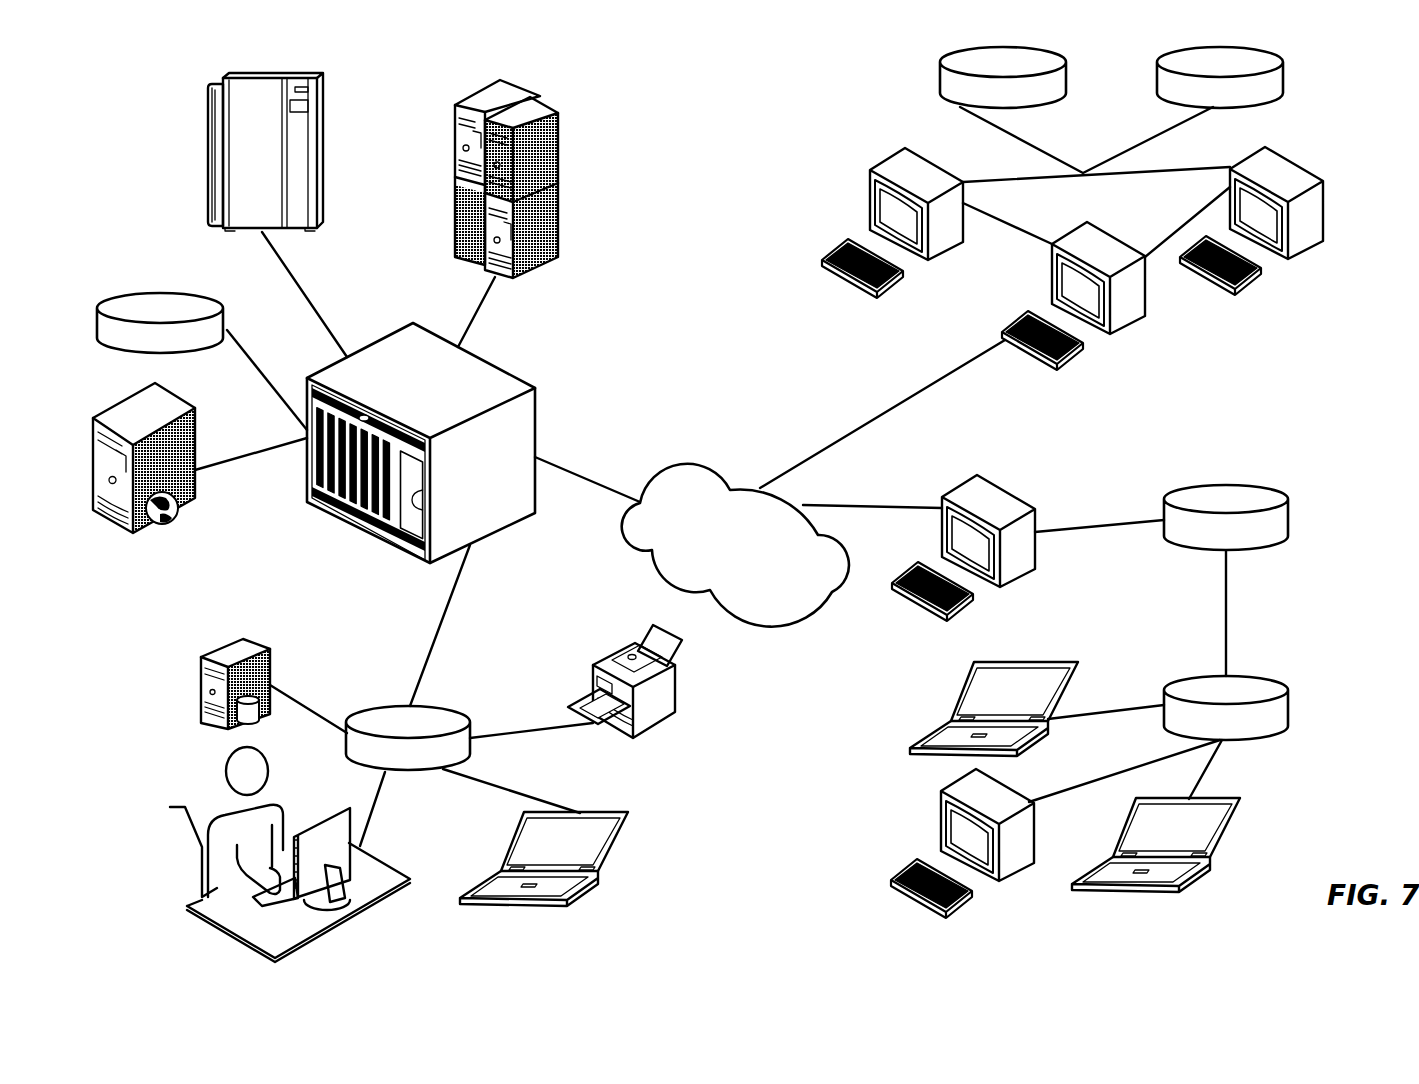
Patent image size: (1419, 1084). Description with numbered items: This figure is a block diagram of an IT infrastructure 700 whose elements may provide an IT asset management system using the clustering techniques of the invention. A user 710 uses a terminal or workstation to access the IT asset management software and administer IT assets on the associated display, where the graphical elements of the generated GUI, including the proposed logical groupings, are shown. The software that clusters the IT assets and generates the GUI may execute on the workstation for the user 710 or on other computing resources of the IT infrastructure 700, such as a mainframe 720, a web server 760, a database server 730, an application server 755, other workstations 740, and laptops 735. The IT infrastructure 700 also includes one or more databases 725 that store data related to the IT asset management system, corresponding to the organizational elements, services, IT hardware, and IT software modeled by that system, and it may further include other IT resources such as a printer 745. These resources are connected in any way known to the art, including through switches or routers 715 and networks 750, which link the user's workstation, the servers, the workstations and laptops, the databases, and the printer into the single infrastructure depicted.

The IT infrastructure 700 is at (724, 112).
The user 710 is at (202, 848).
The switches or routers 715 is at (538, 386).
The mainframe 720 is at (327, 150).
The databases 725 is at (162, 287).
The database server 730 is at (243, 633).
The laptops 735 is at (564, 900).
The workstations 740 is at (883, 293).
The printer 745 is at (653, 738).
The networks 750 is at (662, 468).
The application server 755 is at (558, 183).
The web server 760 is at (193, 497).